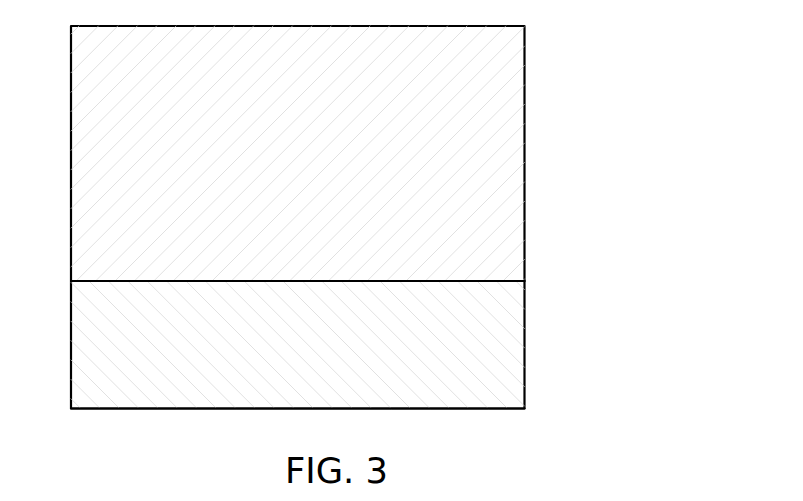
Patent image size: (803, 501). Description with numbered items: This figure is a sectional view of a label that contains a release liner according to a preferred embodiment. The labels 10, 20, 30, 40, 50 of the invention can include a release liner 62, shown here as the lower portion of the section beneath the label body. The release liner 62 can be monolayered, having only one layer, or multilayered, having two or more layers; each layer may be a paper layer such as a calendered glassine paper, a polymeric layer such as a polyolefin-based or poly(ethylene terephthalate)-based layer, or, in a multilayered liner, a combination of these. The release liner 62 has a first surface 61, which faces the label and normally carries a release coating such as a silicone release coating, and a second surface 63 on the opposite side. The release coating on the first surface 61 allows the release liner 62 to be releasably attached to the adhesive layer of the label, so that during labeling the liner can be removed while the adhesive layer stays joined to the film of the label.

The label 10 is at (414, 153).
The label 20 is at (414, 153).
The label 30 is at (414, 153).
The label 40 is at (414, 153).
The label 50 is at (525, 99).
The first surface 61 is at (128, 282).
The release liner 62 is at (525, 345).
The second surface 63 is at (97, 408).